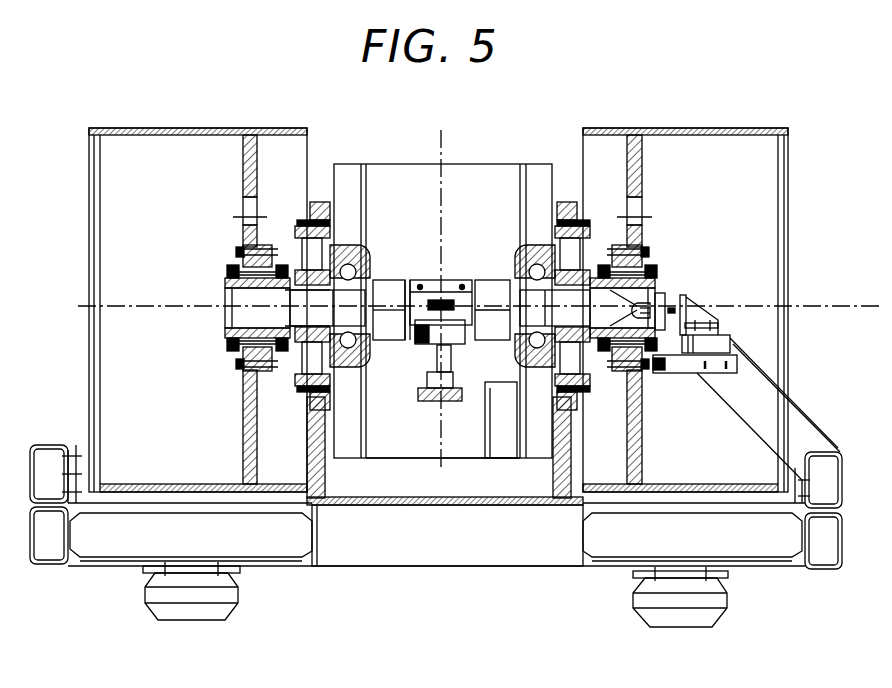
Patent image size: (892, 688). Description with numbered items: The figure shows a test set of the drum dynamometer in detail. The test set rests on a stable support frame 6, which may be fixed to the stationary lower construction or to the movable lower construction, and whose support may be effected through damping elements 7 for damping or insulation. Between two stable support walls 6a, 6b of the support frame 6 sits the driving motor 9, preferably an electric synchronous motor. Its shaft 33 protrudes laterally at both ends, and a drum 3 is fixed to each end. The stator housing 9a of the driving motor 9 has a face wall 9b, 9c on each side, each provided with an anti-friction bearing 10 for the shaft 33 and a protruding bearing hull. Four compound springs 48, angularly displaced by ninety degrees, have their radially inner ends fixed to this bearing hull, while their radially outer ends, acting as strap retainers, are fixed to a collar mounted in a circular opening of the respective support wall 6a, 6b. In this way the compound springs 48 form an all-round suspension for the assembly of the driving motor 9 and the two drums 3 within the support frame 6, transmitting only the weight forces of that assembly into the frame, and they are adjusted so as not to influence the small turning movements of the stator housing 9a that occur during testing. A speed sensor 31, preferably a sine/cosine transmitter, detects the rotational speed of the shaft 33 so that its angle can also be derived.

The drum 3 is at (181, 128).
The support frame 6 is at (466, 546).
The support wall 6a is at (318, 470).
The support wall 6b is at (560, 472).
The damping element 7 is at (192, 605).
The driving motor 9 is at (474, 152).
The stator housing 9a is at (499, 201).
The face wall 9b is at (352, 178).
The face wall 9c is at (540, 178).
The anti-friction bearing 10 is at (356, 271).
The speed sensor 31 is at (703, 310).
The shaft 33 is at (257, 310).
The compound spring 48 is at (310, 255).